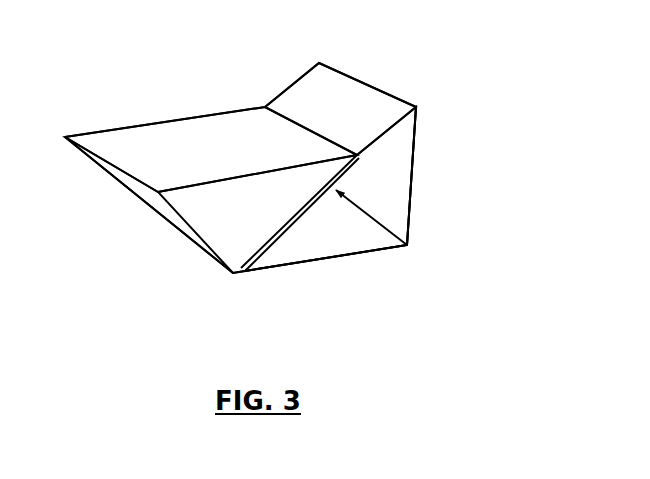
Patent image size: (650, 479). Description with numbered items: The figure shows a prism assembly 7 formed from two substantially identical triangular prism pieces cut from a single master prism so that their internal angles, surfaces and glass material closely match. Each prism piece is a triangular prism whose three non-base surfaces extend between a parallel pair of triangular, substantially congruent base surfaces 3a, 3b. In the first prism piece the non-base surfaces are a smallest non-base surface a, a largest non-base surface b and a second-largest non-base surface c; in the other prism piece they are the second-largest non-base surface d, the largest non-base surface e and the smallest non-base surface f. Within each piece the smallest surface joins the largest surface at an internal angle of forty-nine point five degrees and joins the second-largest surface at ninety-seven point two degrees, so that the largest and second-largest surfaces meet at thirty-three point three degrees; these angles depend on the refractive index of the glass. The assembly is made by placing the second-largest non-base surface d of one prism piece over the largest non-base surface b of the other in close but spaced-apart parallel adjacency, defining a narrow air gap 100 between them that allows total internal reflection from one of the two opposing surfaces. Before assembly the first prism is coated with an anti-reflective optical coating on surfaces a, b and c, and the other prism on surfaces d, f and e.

The prism assembly 7 is at (458, 77).
The largest non-base surface e is at (205, 132).
The largest non-base surface b is at (381, 110).
The smallest non-base surface a is at (420, 183).
The base surface 3b is at (390, 212).
The base surface 3a is at (222, 228).
The smallest non-base surface f is at (148, 205).
The air gap 100 is at (271, 252).
The second-largest non-base surface c is at (340, 262).
The second-largest non-base surface d is at (405, 247).